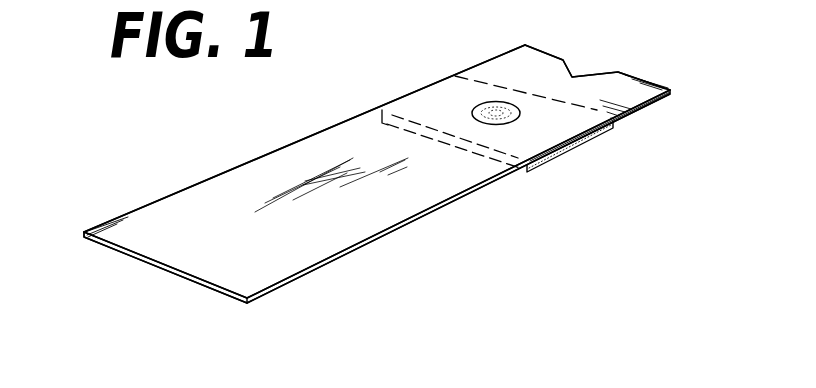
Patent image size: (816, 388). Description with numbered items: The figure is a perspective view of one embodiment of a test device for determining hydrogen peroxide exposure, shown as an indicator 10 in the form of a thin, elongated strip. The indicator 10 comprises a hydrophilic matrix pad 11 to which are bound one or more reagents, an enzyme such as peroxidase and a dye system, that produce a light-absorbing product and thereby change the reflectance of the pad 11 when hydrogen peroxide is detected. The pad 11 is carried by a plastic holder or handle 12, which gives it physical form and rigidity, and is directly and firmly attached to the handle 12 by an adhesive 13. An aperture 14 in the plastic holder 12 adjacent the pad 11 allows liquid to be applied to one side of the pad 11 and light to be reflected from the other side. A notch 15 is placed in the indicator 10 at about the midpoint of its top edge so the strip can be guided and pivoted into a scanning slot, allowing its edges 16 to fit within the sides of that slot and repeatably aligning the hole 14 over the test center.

The indicator 10 is at (131, 194).
The hydrophilic matrix pad 11 is at (610, 127).
The plastic holder or handle 12 is at (192, 283).
The adhesive 13 is at (575, 144).
The aperture 14 is at (493, 120).
The notch 15 is at (568, 68).
The edges 16 is at (218, 173).